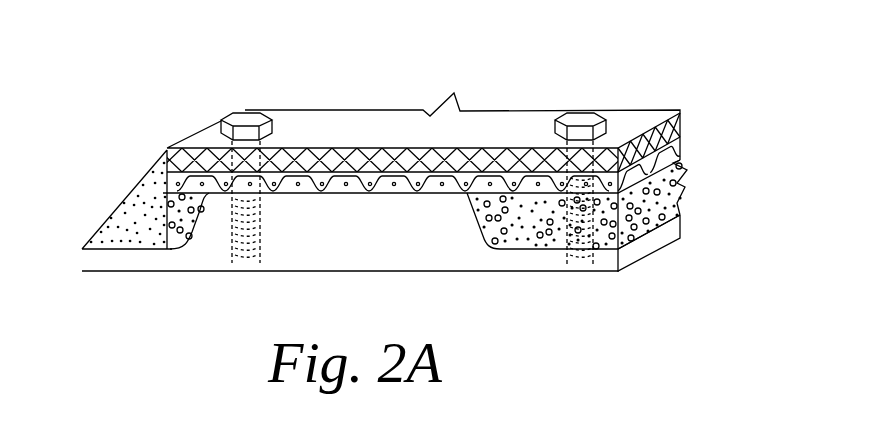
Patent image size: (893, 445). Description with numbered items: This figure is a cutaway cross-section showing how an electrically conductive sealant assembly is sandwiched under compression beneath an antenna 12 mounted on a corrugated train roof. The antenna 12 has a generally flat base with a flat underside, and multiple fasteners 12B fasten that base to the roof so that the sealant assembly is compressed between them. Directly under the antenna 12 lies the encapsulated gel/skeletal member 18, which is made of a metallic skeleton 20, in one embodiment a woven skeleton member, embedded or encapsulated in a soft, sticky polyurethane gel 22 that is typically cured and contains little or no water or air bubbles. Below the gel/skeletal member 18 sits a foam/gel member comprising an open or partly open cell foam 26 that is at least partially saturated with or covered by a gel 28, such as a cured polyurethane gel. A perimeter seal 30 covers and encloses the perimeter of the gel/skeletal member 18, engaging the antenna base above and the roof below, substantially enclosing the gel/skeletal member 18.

The antenna 12 is at (632, 122).
The fasteners 12B is at (240, 117).
The encapsulated gel/skeletal member 18 is at (684, 158).
The metallic skeleton 20 is at (684, 156).
The polyurethane gel 22 is at (340, 183).
The foam 26 is at (667, 202).
The gel 28 is at (512, 228).
The perimeter seal 30 is at (116, 240).